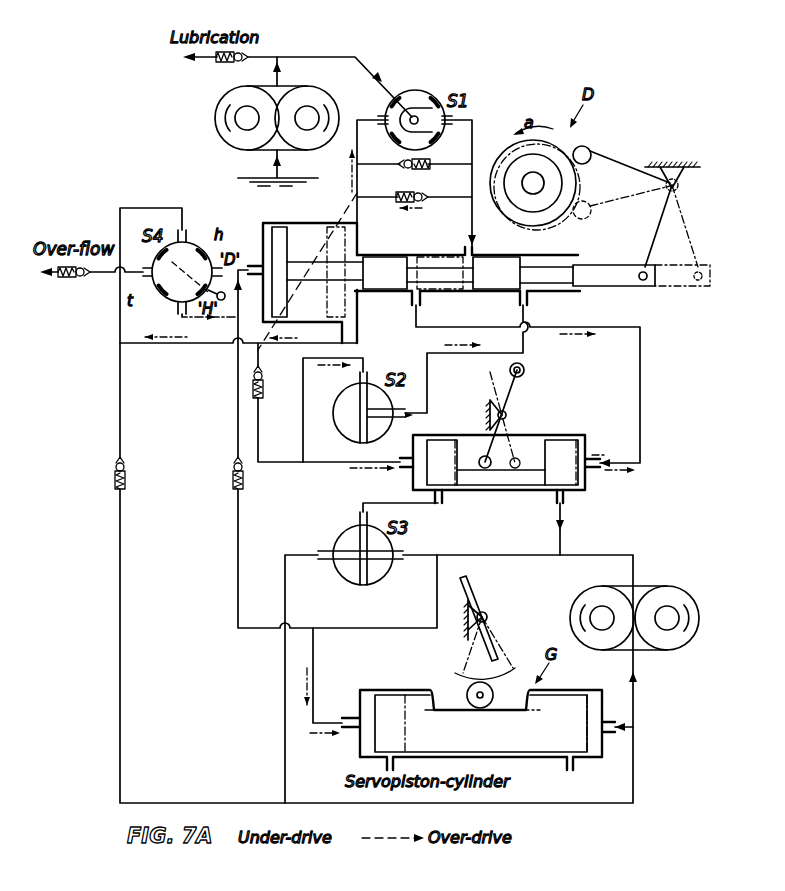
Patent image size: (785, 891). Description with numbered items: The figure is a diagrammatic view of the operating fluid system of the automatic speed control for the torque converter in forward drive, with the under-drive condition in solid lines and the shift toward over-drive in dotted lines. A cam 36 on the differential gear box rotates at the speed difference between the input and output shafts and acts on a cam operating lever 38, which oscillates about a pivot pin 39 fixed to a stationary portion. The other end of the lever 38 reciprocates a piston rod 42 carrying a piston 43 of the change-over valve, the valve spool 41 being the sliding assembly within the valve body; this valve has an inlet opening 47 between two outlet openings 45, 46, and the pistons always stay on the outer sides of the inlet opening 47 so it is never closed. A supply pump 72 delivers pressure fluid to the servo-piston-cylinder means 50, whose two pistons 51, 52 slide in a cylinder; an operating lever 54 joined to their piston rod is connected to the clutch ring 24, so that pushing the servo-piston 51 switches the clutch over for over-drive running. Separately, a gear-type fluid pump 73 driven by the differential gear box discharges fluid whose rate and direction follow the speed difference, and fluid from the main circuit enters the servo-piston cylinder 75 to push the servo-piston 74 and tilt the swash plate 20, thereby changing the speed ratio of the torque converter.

The supply pump 72 is at (222, 136).
The piston 43 is at (282, 233).
The inlet opening 47 is at (470, 252).
The outlet opening 46 is at (413, 300).
The outlet opening 45 is at (528, 302).
The valve spool 41 is at (550, 258).
The piston rod 42 is at (614, 267).
The cam 36 is at (507, 158).
The cam operating lever 38 is at (620, 166).
The pivot pin 39 is at (680, 190).
The servo-piston-cylinder means 50 is at (586, 480).
The piston 51 is at (430, 455).
The piston 52 is at (545, 455).
The operating lever 54 is at (515, 388).
The clutch ring 24 is at (523, 366).
The fluid pump 73 is at (650, 586).
The swash plate 20 is at (492, 648).
The servo-piston 74 is at (540, 755).
The servo-piston cylinder 75 is at (590, 762).